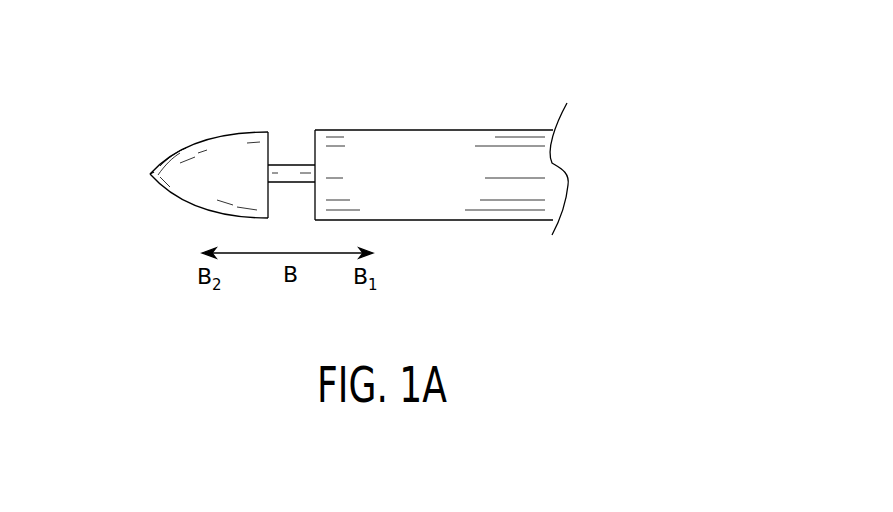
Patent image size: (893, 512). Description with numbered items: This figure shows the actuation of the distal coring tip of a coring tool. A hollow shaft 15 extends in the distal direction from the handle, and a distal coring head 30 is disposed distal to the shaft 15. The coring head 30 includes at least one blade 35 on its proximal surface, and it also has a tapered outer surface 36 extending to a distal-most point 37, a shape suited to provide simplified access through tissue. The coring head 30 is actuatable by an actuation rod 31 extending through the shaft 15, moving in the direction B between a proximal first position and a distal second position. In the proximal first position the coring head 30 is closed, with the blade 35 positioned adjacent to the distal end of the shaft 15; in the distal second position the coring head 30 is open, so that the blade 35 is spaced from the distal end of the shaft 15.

The hollow shaft 15 is at (412, 130).
The distal coring head 30 is at (217, 134).
The actuation rod 31 is at (295, 165).
The blade 35 is at (282, 136).
The tapered outer surface 36 is at (173, 153).
The distal-most point 37 is at (150, 174).